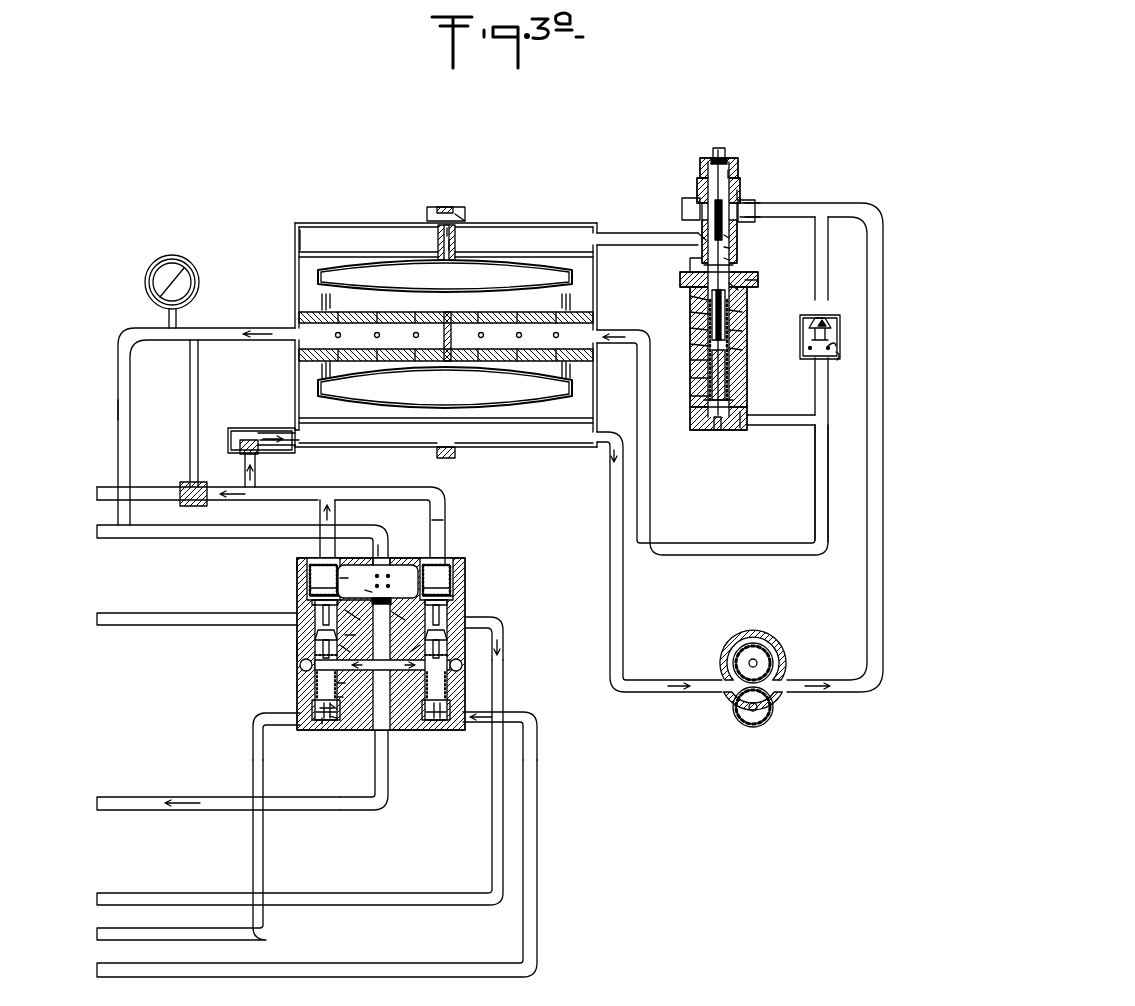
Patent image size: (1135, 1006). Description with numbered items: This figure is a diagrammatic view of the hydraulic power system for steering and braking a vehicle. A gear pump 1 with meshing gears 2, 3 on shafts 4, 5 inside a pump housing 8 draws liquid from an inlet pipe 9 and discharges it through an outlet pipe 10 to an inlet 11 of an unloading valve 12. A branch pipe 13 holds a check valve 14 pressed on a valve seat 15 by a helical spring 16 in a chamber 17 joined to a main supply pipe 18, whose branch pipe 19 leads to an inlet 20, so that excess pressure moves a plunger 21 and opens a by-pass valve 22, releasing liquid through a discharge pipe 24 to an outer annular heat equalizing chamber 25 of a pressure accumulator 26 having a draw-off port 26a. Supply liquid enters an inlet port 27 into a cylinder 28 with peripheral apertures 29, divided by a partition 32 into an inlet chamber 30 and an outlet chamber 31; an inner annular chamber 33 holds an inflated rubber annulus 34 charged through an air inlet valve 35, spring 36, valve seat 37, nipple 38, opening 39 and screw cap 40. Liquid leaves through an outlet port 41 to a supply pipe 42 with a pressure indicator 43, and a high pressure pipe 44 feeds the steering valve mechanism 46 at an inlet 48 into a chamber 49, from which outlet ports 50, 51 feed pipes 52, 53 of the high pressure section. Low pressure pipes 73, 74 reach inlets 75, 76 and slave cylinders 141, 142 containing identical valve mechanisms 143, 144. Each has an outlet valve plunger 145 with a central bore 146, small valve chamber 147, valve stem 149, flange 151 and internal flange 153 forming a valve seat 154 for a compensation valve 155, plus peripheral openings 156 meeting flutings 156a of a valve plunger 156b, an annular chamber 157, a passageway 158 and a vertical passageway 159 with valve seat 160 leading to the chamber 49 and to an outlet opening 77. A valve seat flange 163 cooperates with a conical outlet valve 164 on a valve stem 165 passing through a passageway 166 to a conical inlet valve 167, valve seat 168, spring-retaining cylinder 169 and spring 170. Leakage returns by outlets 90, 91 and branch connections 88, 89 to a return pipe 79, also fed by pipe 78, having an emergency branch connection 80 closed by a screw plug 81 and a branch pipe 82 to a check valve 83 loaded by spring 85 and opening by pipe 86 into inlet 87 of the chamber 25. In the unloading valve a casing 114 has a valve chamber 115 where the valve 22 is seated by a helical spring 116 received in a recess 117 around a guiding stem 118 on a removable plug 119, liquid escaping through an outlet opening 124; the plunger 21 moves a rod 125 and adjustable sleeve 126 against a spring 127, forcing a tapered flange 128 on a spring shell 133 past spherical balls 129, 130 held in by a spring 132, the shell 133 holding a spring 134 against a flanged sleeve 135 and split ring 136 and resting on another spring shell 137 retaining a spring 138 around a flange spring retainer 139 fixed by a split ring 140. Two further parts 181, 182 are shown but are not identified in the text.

The gear pump 1 is at (771, 679).
The meshing gear 2 is at (765, 650).
The meshing gear 3 is at (756, 732).
The shaft 4 is at (760, 663).
The shaft 5 is at (760, 708).
The pump housing 8 is at (736, 644).
The inlet pipe 9 is at (655, 685).
The outlet pipe 10 is at (804, 204).
The inlet 11 is at (766, 206).
The unloading valve 12 is at (773, 133).
The branch pipe 13 is at (828, 254).
The check valve 14 is at (826, 320).
The valve seat 15 is at (824, 322).
The helical spring 16 is at (830, 344).
The chamber 17 is at (840, 362).
The main supply pipe 18 is at (828, 398).
The branch pipe 19 is at (788, 434).
The inlet 20 is at (748, 418).
The plunger 21 is at (717, 430).
The by-pass valve 22 is at (686, 210).
The discharge pipe 24 is at (615, 236).
The outer annular heat equalizing chamber 25 is at (558, 228).
The pressure accumulator 26 is at (612, 281).
The draw-off port 26a is at (455, 458).
The inlet port 27 is at (600, 334).
The cylinder 28 is at (300, 374).
The peripheral apertures 29 is at (340, 338).
The inlet chamber 30 is at (590, 320).
The outlet chamber 31 is at (300, 320).
The partition 32 is at (451, 334).
The inner annular chamber 33 is at (306, 250).
The inflated annulus 34 is at (322, 266).
The air inlet valve 35 is at (456, 235).
The helical spring 36 is at (456, 246).
The valve seat 37 is at (438, 243).
The screw-threaded nipple 38 is at (466, 222).
The opening 39 is at (455, 214).
The screw cap 40 is at (441, 210).
The outlet port 41 is at (297, 340).
The supply pipe 42 is at (213, 331).
The pressure indicator 43 is at (172, 256).
The high pressure pipe 44 is at (178, 533).
The steering valve mechanism 46 is at (280, 555).
The inlet 48 is at (386, 550).
The chamber 49 is at (400, 566).
The outlet port 50 is at (318, 623).
The outlet port 51 is at (468, 618).
The pipe 52 is at (140, 615).
The pipe 53 is at (504, 676).
The pipe 73 is at (147, 930).
The pipe 74 is at (147, 963).
The inlet 75 is at (256, 718).
The inlet 76 is at (482, 724).
The outlet opening 77 is at (388, 781).
The pipe 78 is at (140, 800).
The return pipe 79 is at (150, 487).
The emergency branch connection 80 is at (185, 376).
The screw plug 81 is at (180, 500).
The branch pipe 82 is at (245, 470).
The check valve 83 is at (258, 448).
The helical spring 85 is at (246, 428).
The pipe 86 is at (278, 428).
The inlet 87 is at (302, 440).
The branch connection 88 is at (320, 517).
The branch connection 89 is at (446, 522).
The outlet 90 is at (318, 558).
The outlet 91 is at (448, 558).
The casing 114 is at (745, 331).
The valve chamber 115 is at (684, 214).
The helical spring 116 is at (738, 172).
The cylindrical recess 117 is at (740, 192).
The guiding stem 118 is at (728, 161).
The removable plug 119 is at (722, 148).
The outlet opening 124 is at (700, 238).
The rod 125 is at (698, 359).
The adjustable sleeve 126 is at (698, 395).
The helical spring 127 is at (698, 377).
The tapered flange 128 is at (695, 298).
The spherical ball 129 is at (700, 266).
The spherical ball 130 is at (742, 288).
The spring 132 is at (760, 280).
The spring shell 133 is at (740, 263).
The helical spring 134 is at (698, 314).
The flanged sleeve 135 is at (740, 240).
The split ring 136 is at (740, 251).
The spring shell 137 is at (698, 329).
The helical spring 138 is at (698, 345).
The flange spring retainer 139 is at (745, 313).
The split ring 140 is at (745, 350).
The slave cylinder 141 is at (324, 720).
The slave cylinder 142 is at (432, 722).
The valve mechanism 143 is at (262, 648).
The valve mechanism 144 is at (486, 580).
The outlet valve plunger 145 is at (312, 700).
The central bore 146 is at (338, 682).
The small valve chamber 147 is at (338, 719).
The valve stem 149 is at (320, 726).
The flange 151 is at (334, 724).
The internal flange 153 is at (338, 710).
The valve seat 154 is at (316, 716).
The liquid compensation valve 155 is at (340, 697).
The peripheral openings 156 is at (315, 665).
The flutings 156a is at (345, 636).
The valve plunger 156b is at (381, 665).
The annular chamber 157 is at (315, 680).
The passageway 158 is at (342, 648).
The passageway 159 is at (420, 648).
The valve seat 160 is at (392, 614).
The valve seat flange 163 is at (320, 650).
The conical outlet valve 164 is at (315, 638).
The valve stem 165 is at (320, 620).
The passageway 166 is at (312, 603).
The conical inlet valve 167 is at (307, 592).
The valve seat 168 is at (345, 612).
The spring-retaining cylinder 169 is at (340, 568).
The inlet valve-seating spring 170 is at (340, 574).
The distribution chamber 181 is at (392, 588).
The port 182 is at (368, 590).